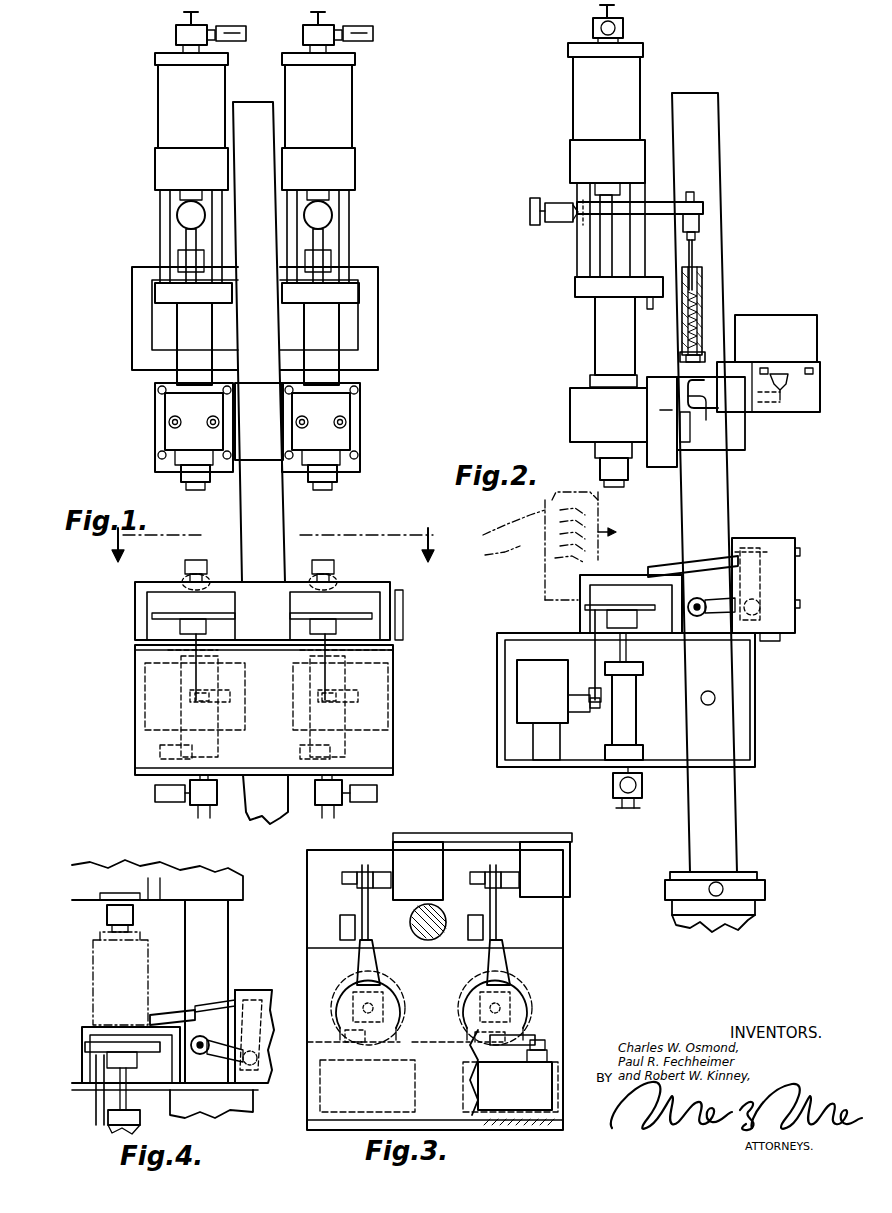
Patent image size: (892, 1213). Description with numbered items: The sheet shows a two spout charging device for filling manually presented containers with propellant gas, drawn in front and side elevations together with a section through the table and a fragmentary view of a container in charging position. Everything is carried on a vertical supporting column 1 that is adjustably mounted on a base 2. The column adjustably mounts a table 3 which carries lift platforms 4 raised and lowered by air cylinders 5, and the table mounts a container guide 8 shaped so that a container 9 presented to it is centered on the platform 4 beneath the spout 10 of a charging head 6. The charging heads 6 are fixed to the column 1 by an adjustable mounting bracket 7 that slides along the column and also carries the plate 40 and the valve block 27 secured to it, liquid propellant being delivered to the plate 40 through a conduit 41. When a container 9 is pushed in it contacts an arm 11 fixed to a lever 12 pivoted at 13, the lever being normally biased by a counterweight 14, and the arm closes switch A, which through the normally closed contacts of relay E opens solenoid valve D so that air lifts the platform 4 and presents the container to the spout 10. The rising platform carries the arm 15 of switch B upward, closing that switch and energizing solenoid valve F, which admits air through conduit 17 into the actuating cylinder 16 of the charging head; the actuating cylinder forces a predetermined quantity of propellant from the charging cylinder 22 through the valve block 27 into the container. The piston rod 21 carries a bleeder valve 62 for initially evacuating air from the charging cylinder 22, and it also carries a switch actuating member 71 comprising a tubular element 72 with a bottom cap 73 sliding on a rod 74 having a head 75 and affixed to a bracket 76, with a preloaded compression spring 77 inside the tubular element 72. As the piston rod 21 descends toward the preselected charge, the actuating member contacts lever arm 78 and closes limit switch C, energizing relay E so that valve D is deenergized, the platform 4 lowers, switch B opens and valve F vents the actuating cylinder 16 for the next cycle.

In FIG. 1, the supporting column 1 is at (280, 526).
In FIG. 2, the supporting column 1 is at (730, 495).
In FIG. 4, the supporting column 1 is at (228, 950).
In FIG. 2, the base 2 is at (726, 902).
In FIG. 1, the table 3 is at (269, 560).
In FIG. 2, the table 3 is at (626, 685).
In FIG. 1, the lift platform 4 is at (165, 606).
In FIG. 2, the lift platform 4 is at (620, 606).
In FIG. 3, the lift platform 4 is at (440, 1026).
In FIG. 4, the lift platform 4 is at (165, 1072).
In FIG. 1, the air cylinder 5 is at (165, 745).
In FIG. 2, the air cylinder 5 is at (636, 694).
In FIG. 4, the air cylinder 5 is at (142, 1118).
In FIG. 1, the charging head 6 is at (132, 290).
In FIG. 2, the charging head 6 is at (575, 287).
In FIG. 2, the mounting bracket 7 is at (745, 448).
In FIG. 1, the container guide 8 is at (264, 596).
In FIG. 2, the container guide 8 is at (631, 587).
In FIG. 3, the container guide 8 is at (435, 990).
In FIG. 2, the container 9 is at (600, 518).
In FIG. 4, the container 9 is at (148, 960).
In FIG. 1, the spout 10 is at (186, 488).
In FIG. 2, the spout 10 is at (630, 480).
In FIG. 4, the spout 10 is at (107, 915).
In FIG. 1, the arm 11 is at (262, 573).
In FIG. 2, the arm 11 is at (693, 550).
In FIG. 3, the arm 11 is at (380, 964).
In FIG. 4, the arm 11 is at (192, 1000).
In FIG. 1, the lever 12 is at (262, 559).
In FIG. 2, the lever 12 is at (758, 586).
In FIG. 4, the lever 12 is at (262, 1042).
In FIG. 2, the pivot 13 is at (760, 607).
In FIG. 3, the pivot 13 is at (430, 884).
In FIG. 4, the pivot 13 is at (258, 1064).
In FIG. 2, the counterweight 14 is at (711, 626).
In FIG. 3, the counterweight 14 is at (400, 913).
In FIG. 4, the counterweight 14 is at (217, 1059).
In FIG. 1, the switch arm 15 is at (181, 656).
In FIG. 2, the switch arm 15 is at (594, 652).
In FIG. 3, the switch arm 15 is at (352, 1046).
In FIG. 4, the switch arm 15 is at (89, 1101).
In FIG. 1, the actuating cylinder 16 is at (165, 85).
In FIG. 2, the actuating cylinder 16 is at (590, 113).
In FIG. 1, the conduit 17 is at (186, 16).
In FIG. 2, the conduit 17 is at (610, 12).
In FIG. 1, the piston rod 21 is at (190, 237).
In FIG. 2, the piston rod 21 is at (608, 245).
In FIG. 1, the charging cylinder 22 is at (178, 372).
In FIG. 2, the charging cylinder 22 is at (600, 336).
In FIG. 1, the valve block 27 is at (165, 432).
In FIG. 2, the valve block 27 is at (570, 409).
In FIG. 2, the plate 40 is at (659, 404).
In FIG. 2, the conduit 41 is at (660, 410).
In FIG. 1, the bleeder valve 62 is at (180, 210).
In FIG. 2, the bleeder valve 62 is at (548, 196).
In FIG. 2, the switch actuating member 71 is at (702, 330).
In FIG. 2, the tubular element 72 is at (702, 300).
In FIG. 2, the bottom cap 73 is at (722, 360).
In FIG. 2, the rod 74 is at (698, 250).
In FIG. 2, the head 75 is at (700, 280).
In FIG. 2, the bracket 76 is at (668, 202).
In FIG. 2, the compression spring 77 is at (740, 345).
In FIG. 2, the lever arm 78 is at (742, 426).
In FIG. 1, the switch A is at (318, 575).
In FIG. 2, the switch A is at (769, 574).
In FIG. 3, the switch A is at (482, 866).
In FIG. 4, the switch A is at (254, 1022).
In FIG. 1, the switch B is at (145, 698).
In FIG. 2, the switch B is at (558, 710).
In FIG. 3, the switch B is at (415, 1094).
In FIG. 2, the limit switch C is at (780, 324).
In FIG. 1, the solenoid actuated valve D is at (263, 801).
In FIG. 2, the solenoid actuated valve D is at (644, 786).
In FIG. 1, the relay E is at (292, 21).
In FIG. 1, the solenoid valve F is at (176, 37).
In FIG. 2, the solenoid valve F is at (589, 29).